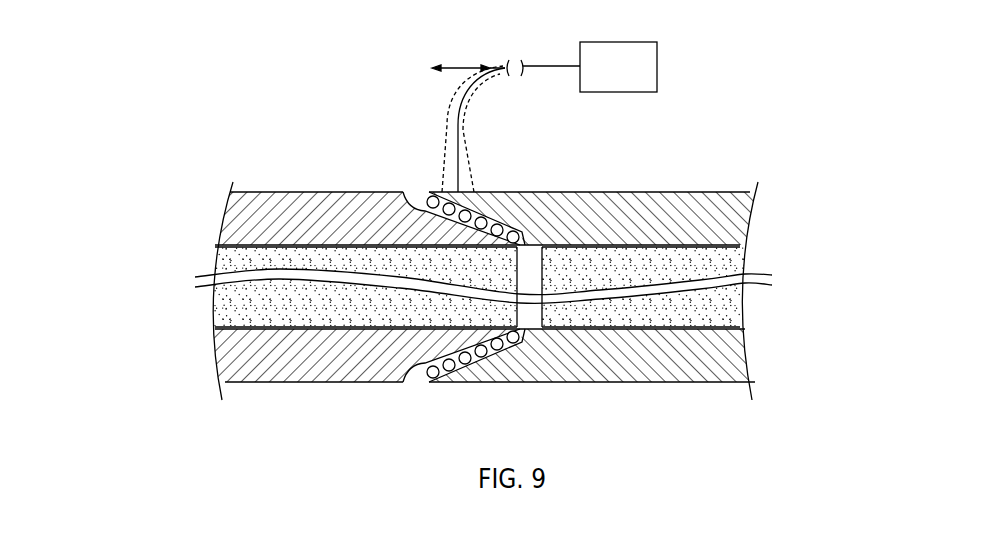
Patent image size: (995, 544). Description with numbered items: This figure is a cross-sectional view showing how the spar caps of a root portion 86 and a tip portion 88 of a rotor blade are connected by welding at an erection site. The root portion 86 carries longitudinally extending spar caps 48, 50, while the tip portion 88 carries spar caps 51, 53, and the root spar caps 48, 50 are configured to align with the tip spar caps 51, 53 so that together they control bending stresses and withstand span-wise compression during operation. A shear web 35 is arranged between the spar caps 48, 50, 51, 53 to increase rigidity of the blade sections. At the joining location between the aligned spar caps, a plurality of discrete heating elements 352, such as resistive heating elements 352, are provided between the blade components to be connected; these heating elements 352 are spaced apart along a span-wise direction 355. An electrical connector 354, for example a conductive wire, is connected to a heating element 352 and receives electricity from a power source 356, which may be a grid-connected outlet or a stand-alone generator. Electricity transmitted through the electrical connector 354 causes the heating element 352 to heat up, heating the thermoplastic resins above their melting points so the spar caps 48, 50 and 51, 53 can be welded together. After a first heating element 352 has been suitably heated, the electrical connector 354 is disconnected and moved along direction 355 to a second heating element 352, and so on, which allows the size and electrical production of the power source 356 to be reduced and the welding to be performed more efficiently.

The shear web 35 is at (238, 312).
The blade root spar cap 48 is at (320, 358).
The blade root spar cap 50 is at (282, 200).
The blade tip spar cap 51 is at (668, 370).
The blade tip spar cap 53 is at (646, 200).
The root portion 86 is at (197, 383).
The tip portion 88 is at (750, 163).
The heating element 352 is at (420, 200).
The electrical connector 354 is at (459, 116).
The span-wise direction 355 is at (466, 64).
The power source 356 is at (603, 79).